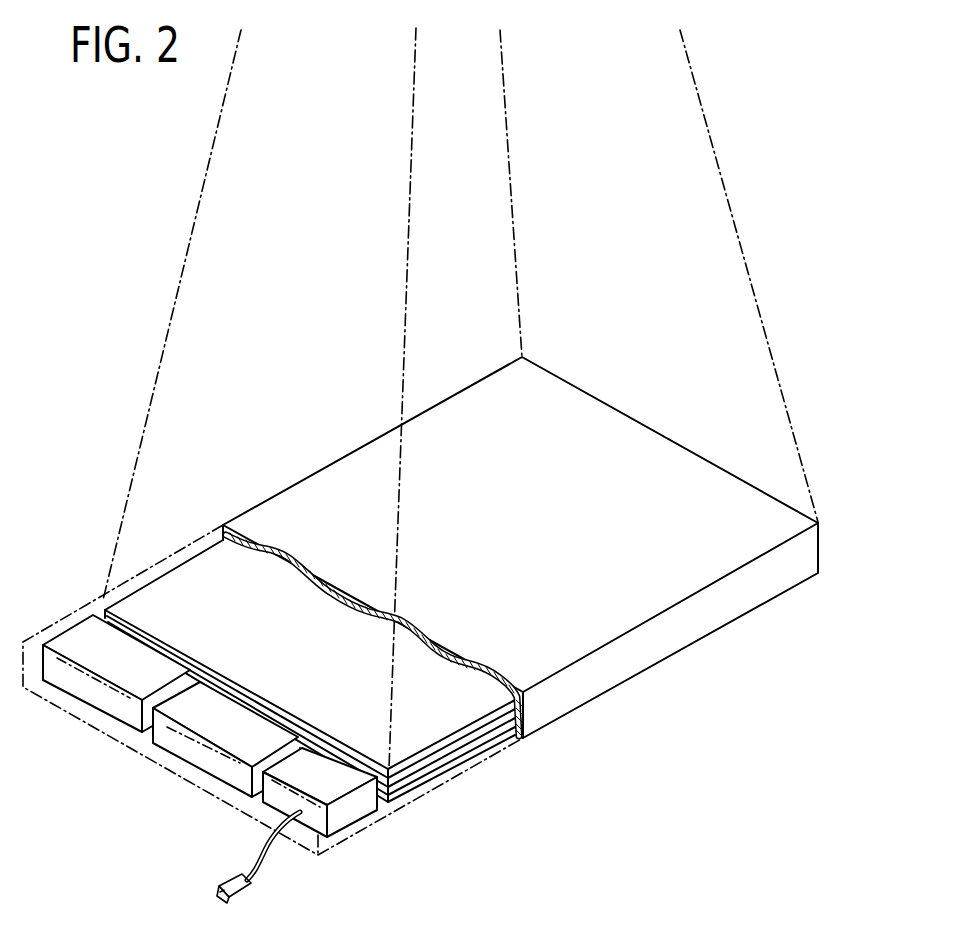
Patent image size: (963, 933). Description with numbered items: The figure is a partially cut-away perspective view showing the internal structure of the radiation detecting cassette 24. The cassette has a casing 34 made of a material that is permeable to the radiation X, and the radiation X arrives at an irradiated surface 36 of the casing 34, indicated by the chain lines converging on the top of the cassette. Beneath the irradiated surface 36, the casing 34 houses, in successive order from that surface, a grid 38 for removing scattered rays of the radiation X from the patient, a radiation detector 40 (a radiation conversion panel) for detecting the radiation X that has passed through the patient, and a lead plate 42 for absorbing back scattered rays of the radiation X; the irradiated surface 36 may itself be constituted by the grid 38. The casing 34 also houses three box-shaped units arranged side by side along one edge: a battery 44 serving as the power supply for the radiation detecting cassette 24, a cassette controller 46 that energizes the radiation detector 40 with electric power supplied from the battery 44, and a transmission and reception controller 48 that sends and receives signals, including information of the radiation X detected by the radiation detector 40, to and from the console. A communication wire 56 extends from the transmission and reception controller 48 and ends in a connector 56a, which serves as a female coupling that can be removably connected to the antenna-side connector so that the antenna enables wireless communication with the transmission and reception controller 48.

The radiation detecting cassette 24 is at (461, 585).
The casing 34 is at (627, 660).
The irradiated surface 36 is at (630, 440).
The grid 38 is at (441, 665).
The radiation detector 40 is at (470, 740).
The lead plate 42 is at (452, 772).
The battery 44 is at (75, 687).
The cassette controller 46 is at (187, 748).
The transmission and reception controller 48 is at (333, 827).
The communication wire 56 is at (255, 863).
The connector 56a is at (221, 889).
The radiation X is at (176, 295).